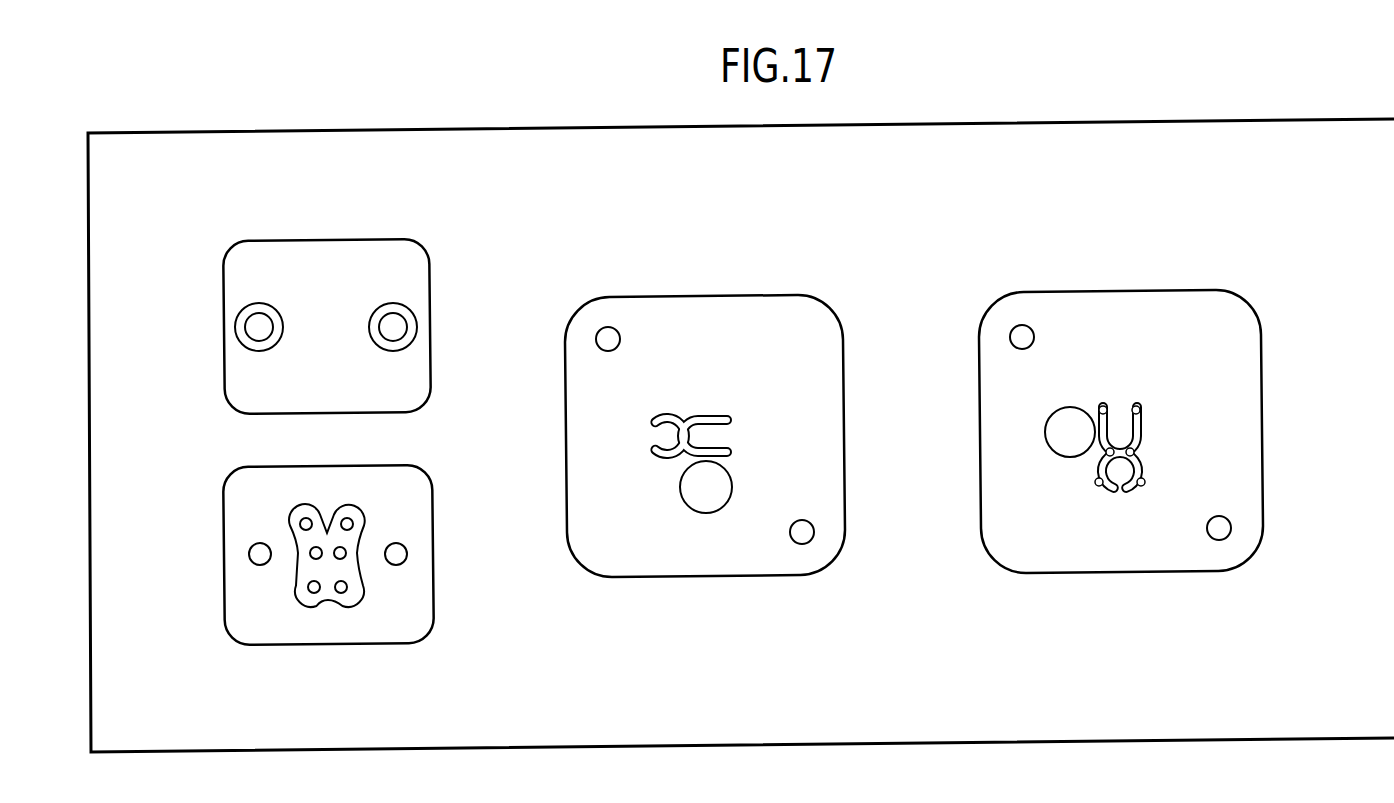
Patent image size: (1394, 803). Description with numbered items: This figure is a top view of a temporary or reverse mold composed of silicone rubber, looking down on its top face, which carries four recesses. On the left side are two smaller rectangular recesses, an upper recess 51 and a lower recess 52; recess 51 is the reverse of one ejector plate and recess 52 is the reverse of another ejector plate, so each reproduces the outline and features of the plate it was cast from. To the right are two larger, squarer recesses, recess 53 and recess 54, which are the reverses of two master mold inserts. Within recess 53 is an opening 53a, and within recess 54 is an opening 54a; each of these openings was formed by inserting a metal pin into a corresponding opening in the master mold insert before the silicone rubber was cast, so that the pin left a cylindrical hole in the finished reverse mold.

The recess 51 is at (380, 252).
The recess 52 is at (420, 507).
The recess 53 is at (705, 415).
The opening 53a is at (712, 507).
The recess 54 is at (1121, 404).
The opening 54a is at (1055, 448).